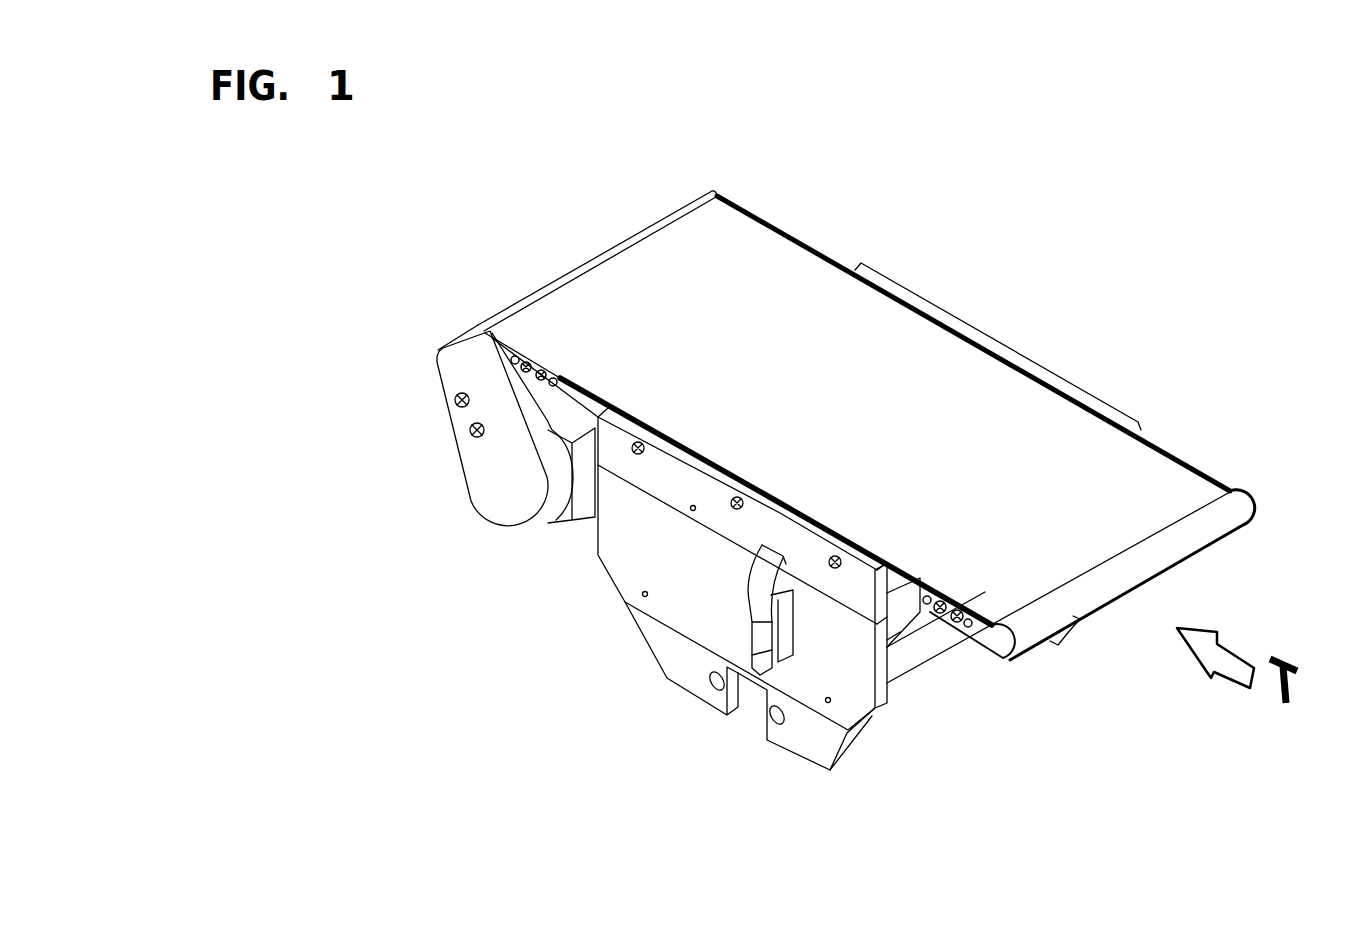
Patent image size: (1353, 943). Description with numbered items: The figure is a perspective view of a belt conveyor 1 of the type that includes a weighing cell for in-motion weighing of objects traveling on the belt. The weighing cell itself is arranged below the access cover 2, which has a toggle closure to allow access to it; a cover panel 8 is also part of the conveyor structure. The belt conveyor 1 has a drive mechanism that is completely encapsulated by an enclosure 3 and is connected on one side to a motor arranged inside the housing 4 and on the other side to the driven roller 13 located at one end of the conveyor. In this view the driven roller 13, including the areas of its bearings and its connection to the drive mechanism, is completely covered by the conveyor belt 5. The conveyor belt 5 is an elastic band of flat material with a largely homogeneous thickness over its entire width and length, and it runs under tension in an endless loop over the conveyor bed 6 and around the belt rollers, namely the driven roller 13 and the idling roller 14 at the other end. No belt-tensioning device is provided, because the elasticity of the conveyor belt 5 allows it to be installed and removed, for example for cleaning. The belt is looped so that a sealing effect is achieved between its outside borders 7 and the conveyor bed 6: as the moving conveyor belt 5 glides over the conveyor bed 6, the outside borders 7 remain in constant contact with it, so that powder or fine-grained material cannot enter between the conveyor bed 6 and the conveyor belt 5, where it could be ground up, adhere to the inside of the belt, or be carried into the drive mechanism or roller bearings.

The belt conveyor 1 is at (1125, 235).
The access cover 2 is at (643, 566).
The enclosure of drive mechanism 3 is at (478, 463).
The housing of motor 4 is at (583, 493).
The conveyor belt 5 is at (768, 290).
The conveyor bed 6 is at (575, 393).
The outside border of conveyor belt 7 is at (815, 240).
The cover panel 8 is at (717, 507).
The driven roller 13 is at (548, 285).
The idling roller 14 is at (1047, 643).